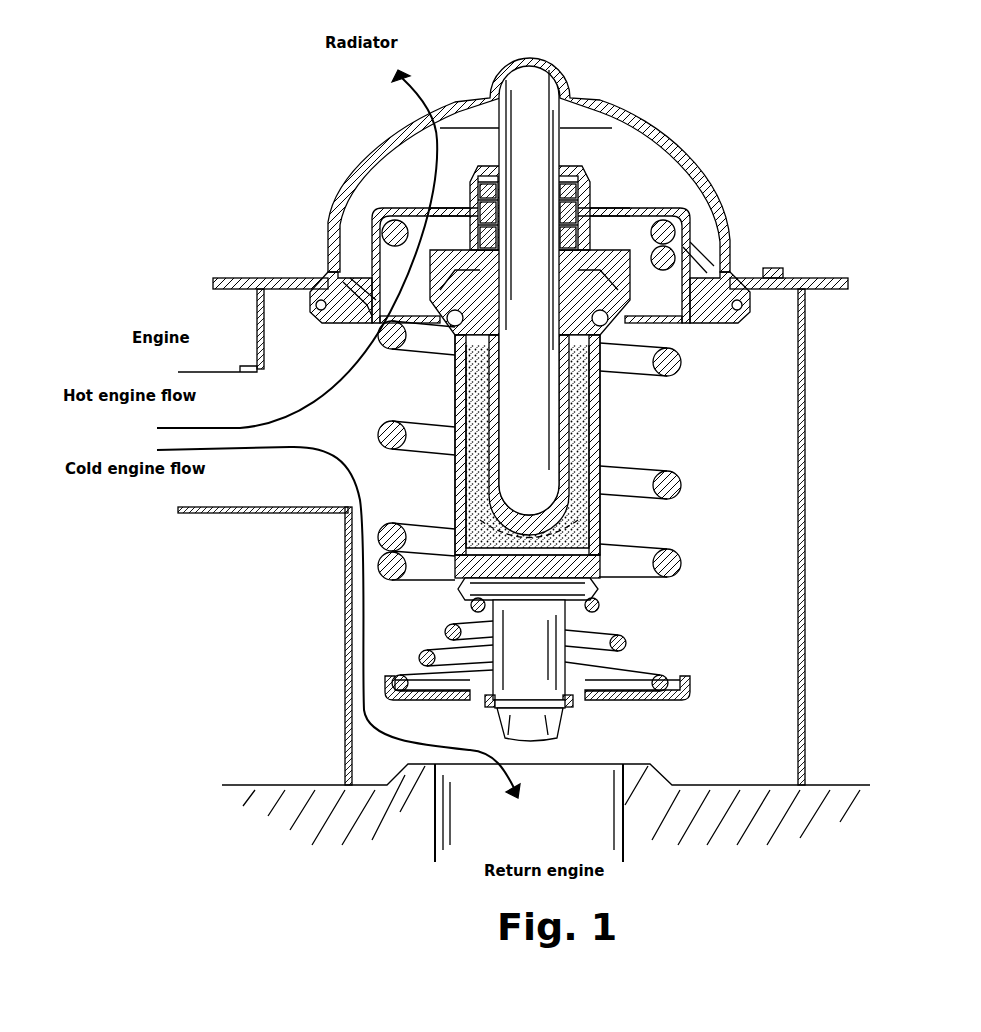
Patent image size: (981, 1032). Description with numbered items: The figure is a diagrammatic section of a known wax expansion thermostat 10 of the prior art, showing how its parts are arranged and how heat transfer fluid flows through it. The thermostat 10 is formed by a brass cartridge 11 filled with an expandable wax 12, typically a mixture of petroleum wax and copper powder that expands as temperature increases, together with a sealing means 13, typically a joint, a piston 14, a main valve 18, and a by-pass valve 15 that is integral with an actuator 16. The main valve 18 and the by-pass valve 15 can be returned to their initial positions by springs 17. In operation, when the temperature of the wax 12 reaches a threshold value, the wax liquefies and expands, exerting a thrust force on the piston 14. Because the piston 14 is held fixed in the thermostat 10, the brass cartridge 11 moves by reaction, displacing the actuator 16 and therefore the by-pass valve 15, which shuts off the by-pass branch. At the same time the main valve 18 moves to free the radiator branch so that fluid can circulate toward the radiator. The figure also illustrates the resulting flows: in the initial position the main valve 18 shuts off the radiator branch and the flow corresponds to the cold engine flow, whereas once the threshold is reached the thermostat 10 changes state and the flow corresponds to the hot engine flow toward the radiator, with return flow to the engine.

The wax expansion thermostat 10 is at (680, 132).
The brass cartridge 11 is at (598, 420).
The expandable wax 12 is at (598, 512).
The sealing means 13 is at (458, 481).
The piston 14 is at (523, 100).
The by-pass valve 15 is at (676, 703).
The actuator 16 is at (540, 627).
The springs 17 is at (398, 427).
The main valve 18 is at (667, 324).